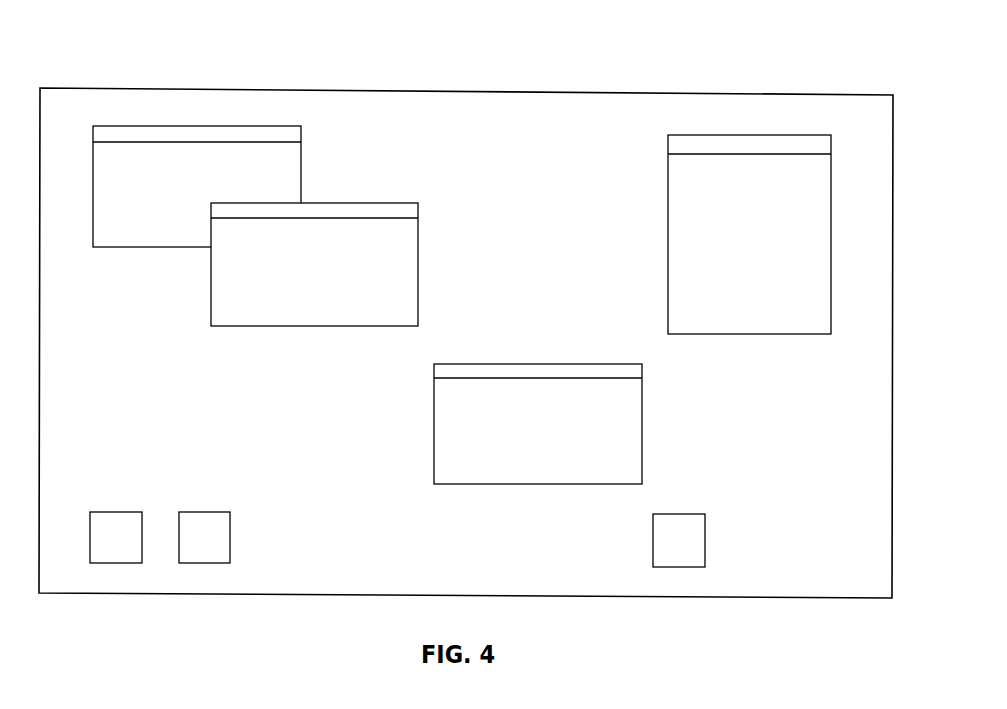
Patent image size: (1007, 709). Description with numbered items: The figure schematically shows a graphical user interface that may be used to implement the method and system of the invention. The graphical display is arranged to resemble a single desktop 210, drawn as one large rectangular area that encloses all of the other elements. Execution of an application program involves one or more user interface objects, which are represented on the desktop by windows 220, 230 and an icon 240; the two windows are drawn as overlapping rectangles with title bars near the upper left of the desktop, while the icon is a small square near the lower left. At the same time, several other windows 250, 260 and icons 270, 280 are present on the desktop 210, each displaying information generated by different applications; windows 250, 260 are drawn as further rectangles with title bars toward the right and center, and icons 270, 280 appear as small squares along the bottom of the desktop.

The desktop 210 is at (153, 64).
The window 220 is at (301, 155).
The window 230 is at (418, 235).
The icon 240 is at (115, 512).
The window 250 is at (668, 165).
The window 260 is at (642, 425).
The icon 270 is at (205, 512).
The icon 280 is at (672, 514).